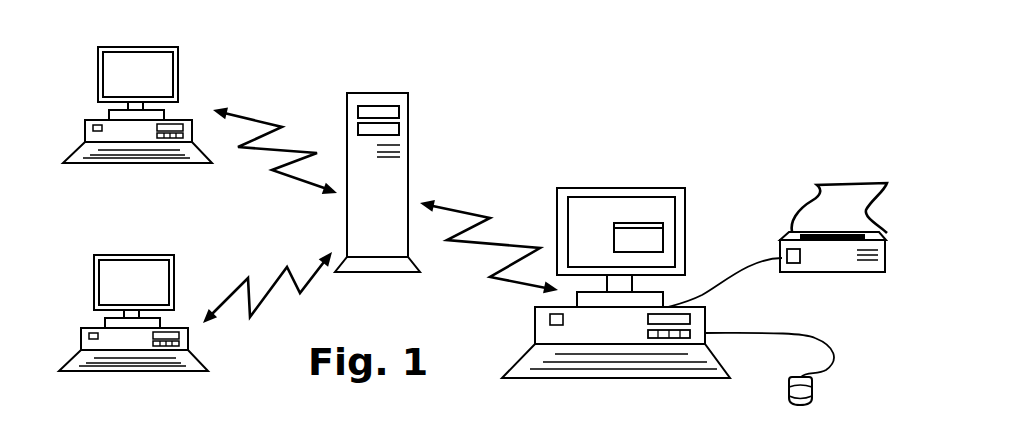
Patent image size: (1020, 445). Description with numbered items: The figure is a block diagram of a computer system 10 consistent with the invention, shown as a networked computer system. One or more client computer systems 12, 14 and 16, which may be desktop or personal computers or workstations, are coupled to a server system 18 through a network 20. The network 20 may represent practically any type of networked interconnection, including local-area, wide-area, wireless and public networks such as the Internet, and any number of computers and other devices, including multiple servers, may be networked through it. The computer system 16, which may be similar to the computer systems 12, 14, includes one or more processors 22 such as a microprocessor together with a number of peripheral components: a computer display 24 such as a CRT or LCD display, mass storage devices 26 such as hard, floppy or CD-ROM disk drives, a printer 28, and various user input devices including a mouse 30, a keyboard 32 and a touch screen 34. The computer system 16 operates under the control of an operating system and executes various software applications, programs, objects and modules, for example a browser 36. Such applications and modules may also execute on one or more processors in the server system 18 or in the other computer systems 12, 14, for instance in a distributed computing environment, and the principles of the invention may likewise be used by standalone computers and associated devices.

The computer system 10 is at (543, 102).
The client computer system 12 is at (98, 65).
The client computer system 14 is at (94, 257).
The client computer system 16 is at (603, 278).
The server system 18 is at (364, 93).
The network 20 is at (278, 272).
The processor 22 is at (590, 333).
The computer display 24 is at (597, 188).
The mass storage device 26 is at (665, 340).
The printer 28 is at (797, 237).
The mouse 30 is at (810, 395).
The keyboard 32 is at (520, 375).
The touch screen 34 is at (583, 236).
The browser 36 is at (613, 228).